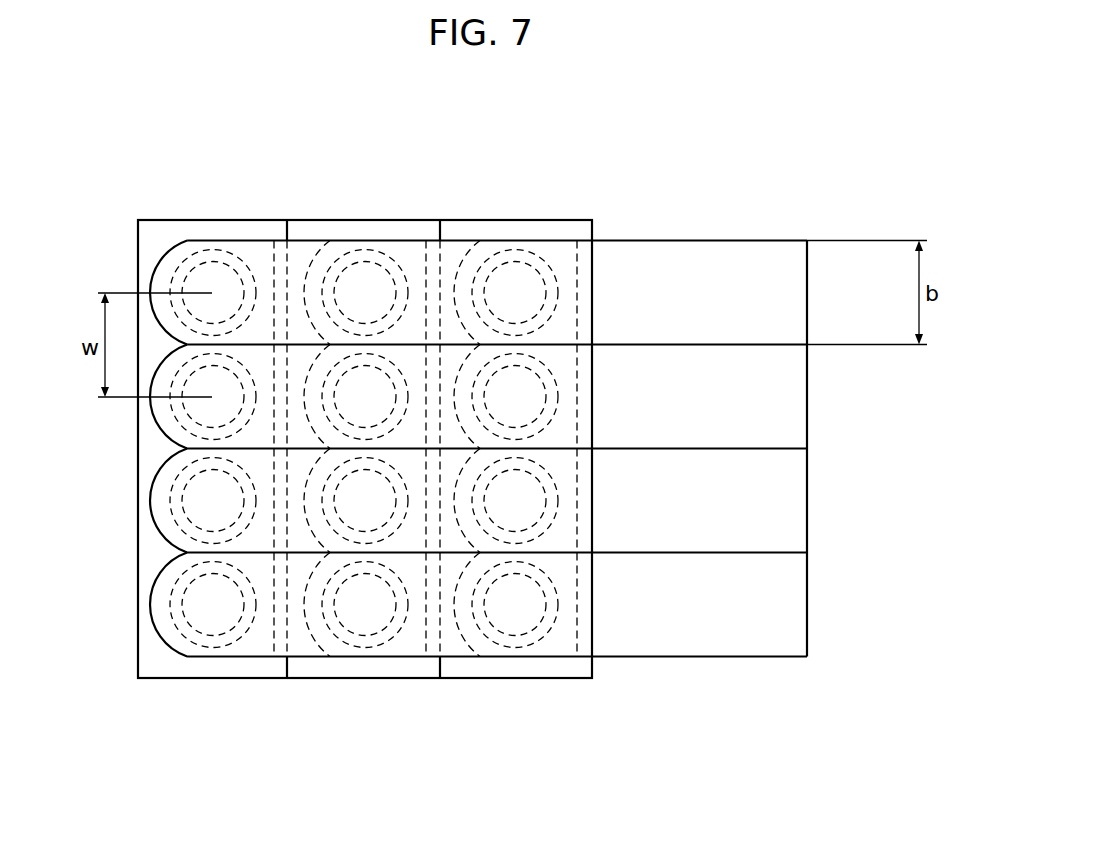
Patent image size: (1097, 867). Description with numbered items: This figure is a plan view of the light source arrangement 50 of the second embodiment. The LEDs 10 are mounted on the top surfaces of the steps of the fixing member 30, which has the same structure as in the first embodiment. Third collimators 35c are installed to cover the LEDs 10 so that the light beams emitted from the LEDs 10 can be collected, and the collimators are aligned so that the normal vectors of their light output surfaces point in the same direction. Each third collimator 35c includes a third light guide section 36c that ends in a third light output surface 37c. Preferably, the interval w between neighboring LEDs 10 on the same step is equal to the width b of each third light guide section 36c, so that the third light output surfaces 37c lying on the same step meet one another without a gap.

The LED 10 is at (227, 625).
The fixing member 30 is at (160, 658).
The bus bar assembly 50 is at (523, 368).
The third collimator 35c is at (680, 236).
The third light guide section 36c is at (737, 305).
The third light output surface 37c is at (807, 293).